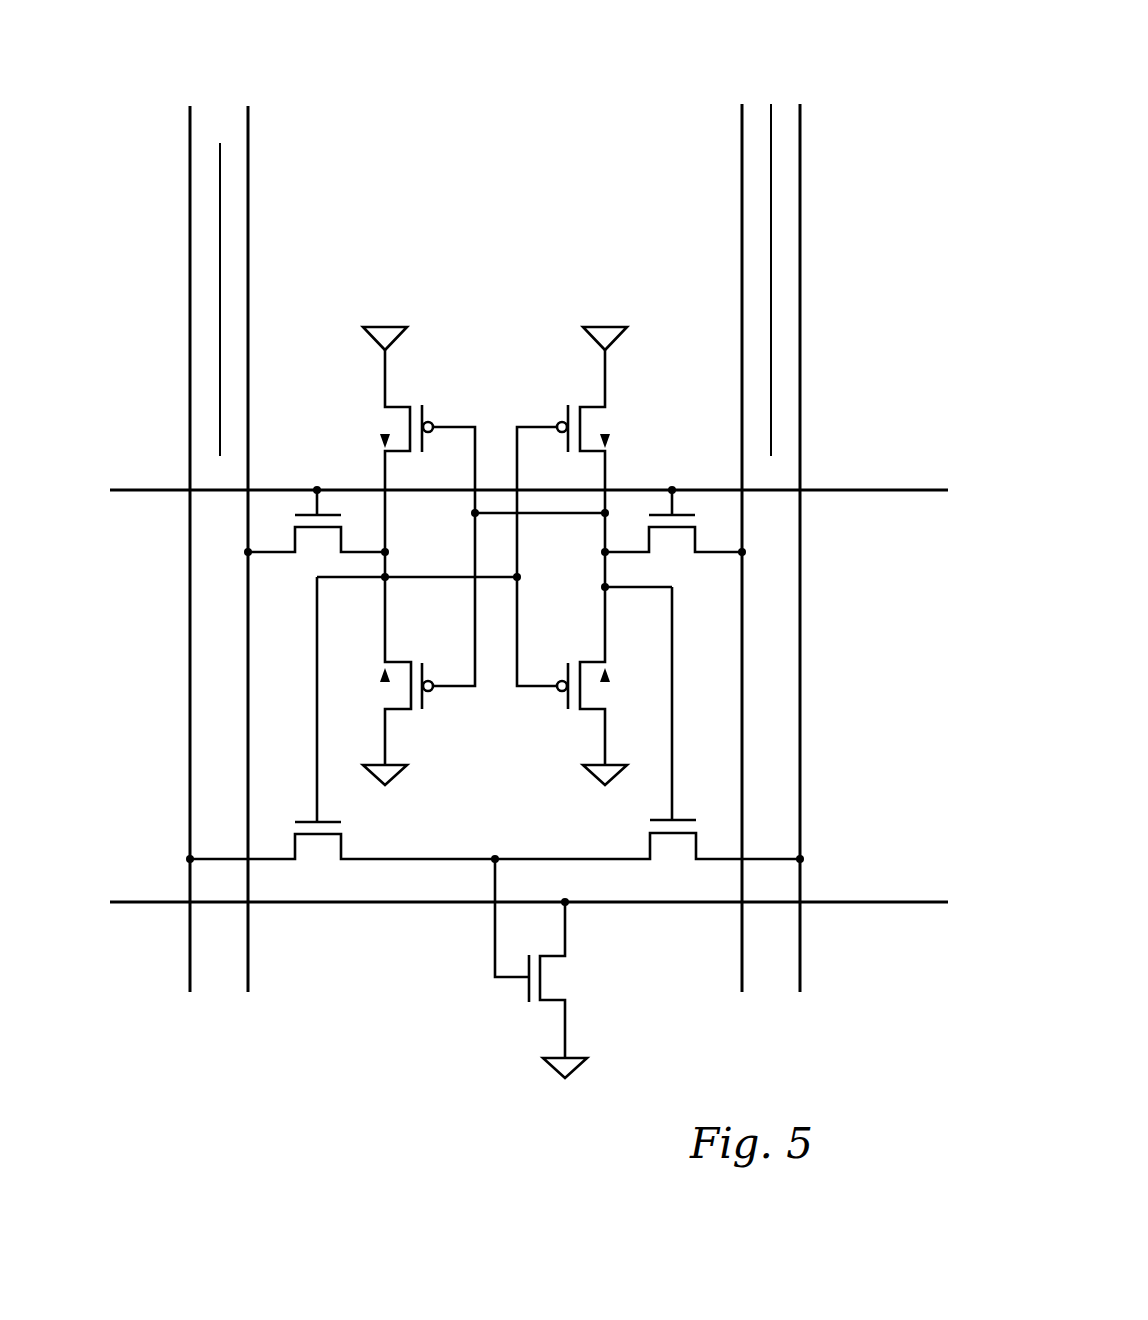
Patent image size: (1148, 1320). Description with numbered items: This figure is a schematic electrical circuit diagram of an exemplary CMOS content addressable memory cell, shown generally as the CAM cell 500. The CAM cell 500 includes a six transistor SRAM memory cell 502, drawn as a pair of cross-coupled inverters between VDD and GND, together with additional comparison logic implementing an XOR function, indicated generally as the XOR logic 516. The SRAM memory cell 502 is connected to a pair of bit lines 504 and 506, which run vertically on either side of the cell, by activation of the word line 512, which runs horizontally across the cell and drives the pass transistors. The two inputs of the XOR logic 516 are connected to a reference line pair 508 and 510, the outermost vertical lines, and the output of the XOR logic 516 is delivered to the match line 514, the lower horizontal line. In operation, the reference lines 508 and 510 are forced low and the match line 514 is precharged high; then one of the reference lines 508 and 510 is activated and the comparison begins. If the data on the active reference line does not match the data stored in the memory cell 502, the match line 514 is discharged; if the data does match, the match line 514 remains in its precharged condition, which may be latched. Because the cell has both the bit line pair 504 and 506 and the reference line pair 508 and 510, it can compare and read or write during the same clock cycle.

The CMOS CAM cell 500 is at (874, 72).
The six transistor SRAM memory cell 502 is at (492, 428).
The bit line 504 is at (248, 204).
The bit line 506 is at (742, 128).
The reference line 508 is at (800, 365).
The reference line 510 is at (190, 600).
The word line 512 is at (856, 490).
The match line 514 is at (862, 902).
The XOR logic 516 is at (630, 838).